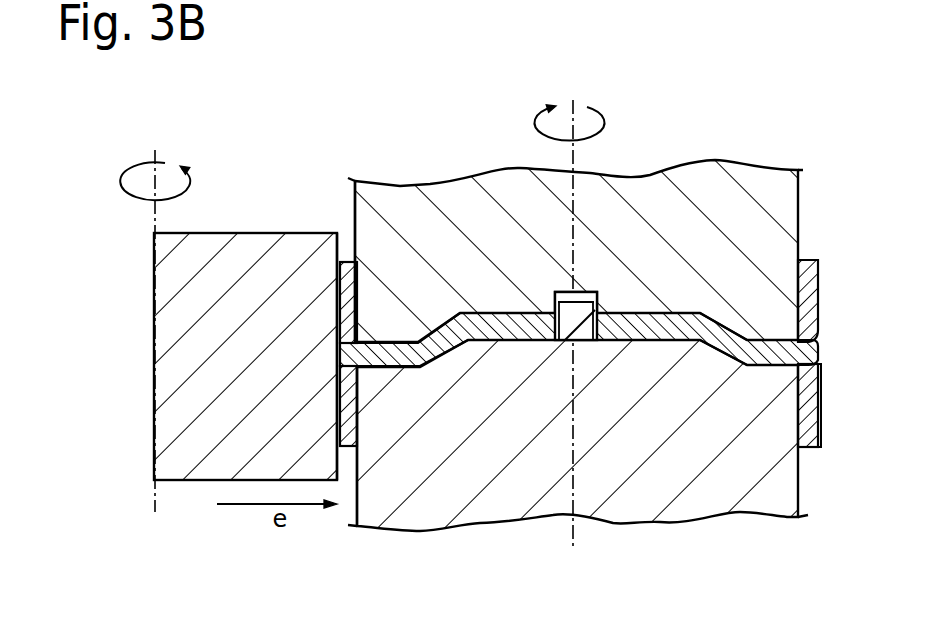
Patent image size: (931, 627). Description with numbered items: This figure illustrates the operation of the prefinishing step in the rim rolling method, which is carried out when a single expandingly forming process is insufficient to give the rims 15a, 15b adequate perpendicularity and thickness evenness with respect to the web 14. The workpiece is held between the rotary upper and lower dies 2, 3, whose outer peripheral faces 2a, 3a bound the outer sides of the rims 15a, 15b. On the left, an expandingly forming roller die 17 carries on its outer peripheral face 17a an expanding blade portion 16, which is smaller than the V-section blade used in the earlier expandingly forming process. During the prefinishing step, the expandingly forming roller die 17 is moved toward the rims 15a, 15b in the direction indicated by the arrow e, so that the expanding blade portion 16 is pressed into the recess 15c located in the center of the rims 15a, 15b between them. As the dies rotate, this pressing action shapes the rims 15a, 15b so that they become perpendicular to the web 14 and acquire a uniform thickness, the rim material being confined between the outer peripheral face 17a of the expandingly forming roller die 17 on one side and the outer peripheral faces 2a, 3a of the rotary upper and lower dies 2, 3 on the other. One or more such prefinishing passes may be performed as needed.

The rotary upper die 2 is at (690, 176).
The outer peripheral face of rotary upper die 2a is at (356, 214).
The rotary lower die 3 is at (705, 500).
The outer peripheral face of rotary lower die 3a is at (358, 508).
The web 14 is at (523, 340).
The rim 15a is at (338, 296).
The rim 15b is at (352, 420).
The recess 15c is at (348, 364).
The expanding blade portion 16 is at (385, 345).
The expandingly forming roller die 17 is at (217, 236).
The outer peripheral face of expandingly forming roller die 17a is at (356, 252).